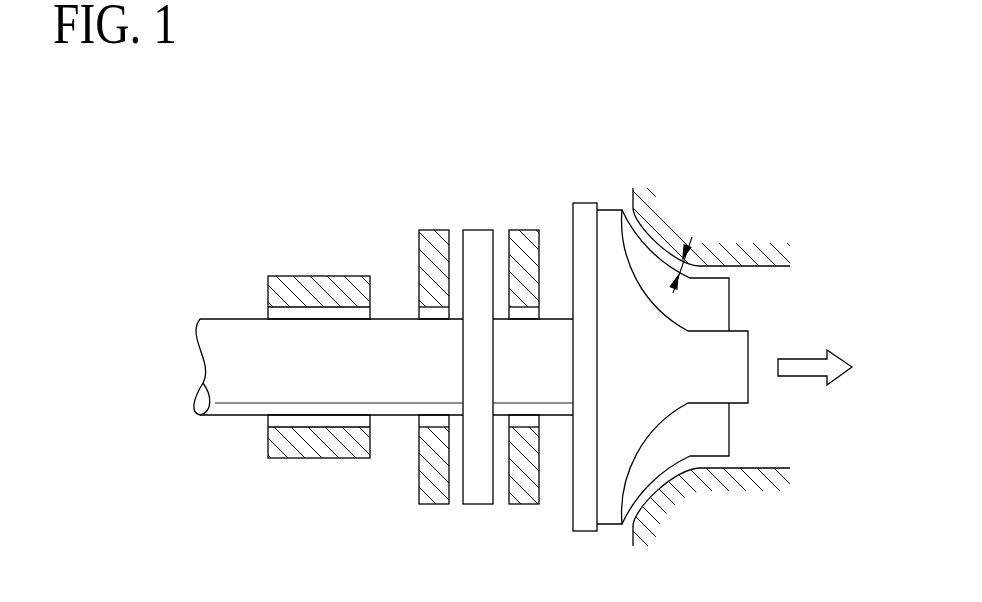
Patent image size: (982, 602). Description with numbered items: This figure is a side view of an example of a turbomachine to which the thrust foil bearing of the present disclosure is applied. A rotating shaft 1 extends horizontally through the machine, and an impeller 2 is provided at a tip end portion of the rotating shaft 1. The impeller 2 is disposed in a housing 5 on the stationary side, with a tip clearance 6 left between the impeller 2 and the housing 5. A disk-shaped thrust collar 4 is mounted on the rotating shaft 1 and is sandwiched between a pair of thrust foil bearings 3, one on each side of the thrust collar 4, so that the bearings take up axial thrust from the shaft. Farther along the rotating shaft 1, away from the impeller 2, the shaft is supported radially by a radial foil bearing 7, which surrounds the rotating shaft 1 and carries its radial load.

The rotating shaft 1 is at (228, 327).
The impeller 2 is at (628, 268).
The thrust foil bearing 3 is at (432, 243).
The thrust collar 4 is at (482, 243).
The housing 5 is at (663, 232).
The tip clearance 6 is at (702, 268).
The radial foil bearing 7 is at (318, 290).